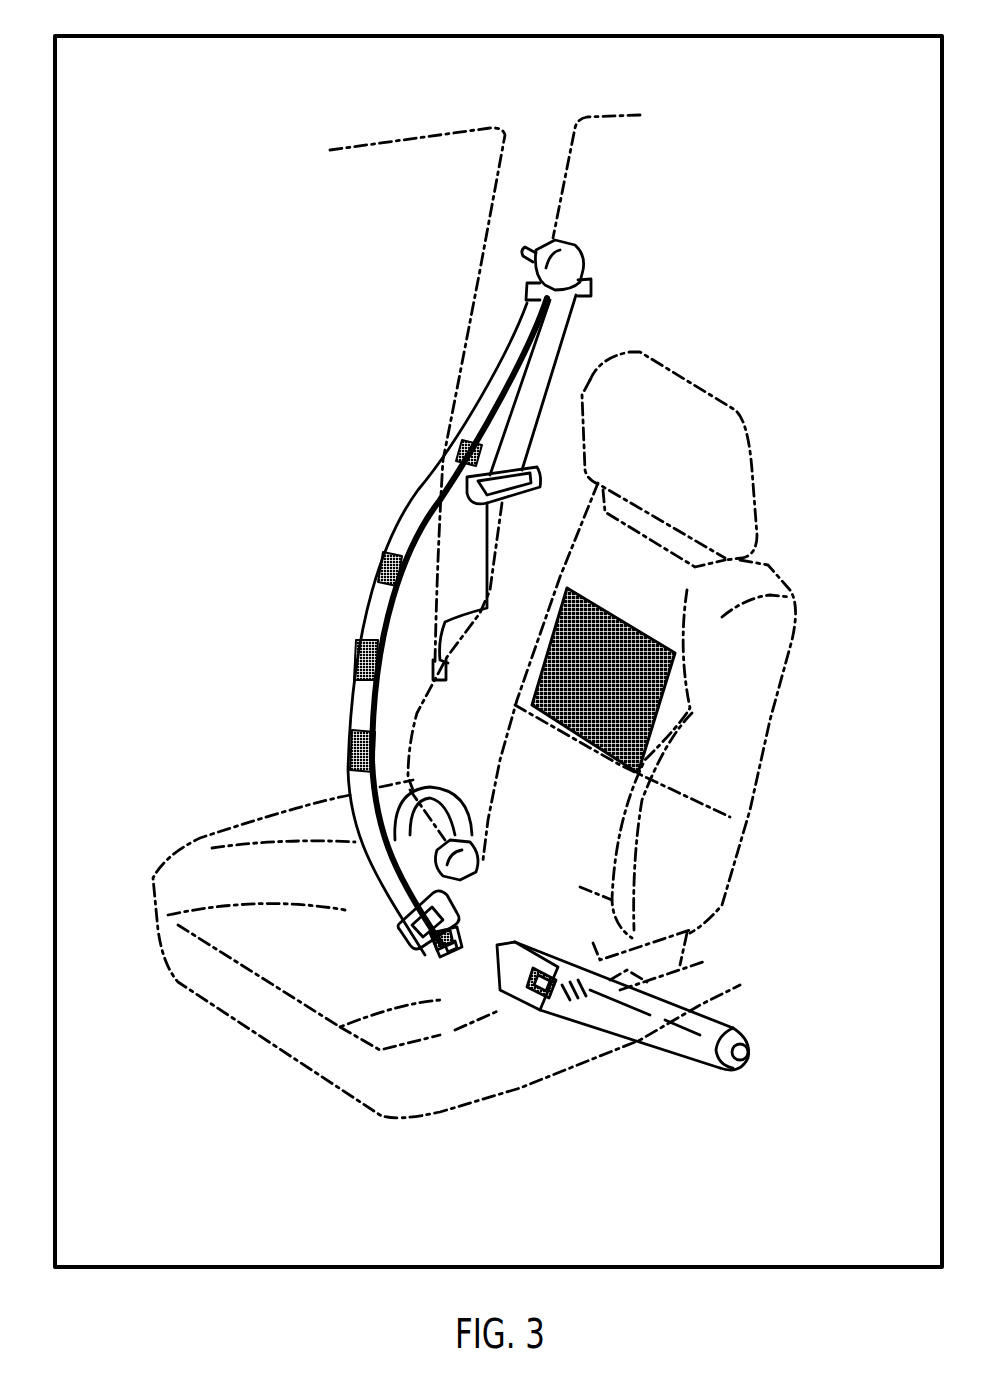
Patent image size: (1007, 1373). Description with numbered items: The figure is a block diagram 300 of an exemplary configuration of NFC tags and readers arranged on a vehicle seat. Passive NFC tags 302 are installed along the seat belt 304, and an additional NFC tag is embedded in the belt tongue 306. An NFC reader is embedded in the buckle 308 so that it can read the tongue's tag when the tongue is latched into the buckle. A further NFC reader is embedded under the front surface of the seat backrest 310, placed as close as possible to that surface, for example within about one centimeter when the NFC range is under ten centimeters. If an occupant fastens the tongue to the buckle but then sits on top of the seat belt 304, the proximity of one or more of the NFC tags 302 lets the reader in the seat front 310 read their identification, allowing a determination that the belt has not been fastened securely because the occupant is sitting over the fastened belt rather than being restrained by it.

The block diagram 300 is at (130, 36).
The NFC tags 302 is at (356, 745).
The seat belt 304 is at (555, 340).
The NFC tag in tongue 306 is at (510, 1198).
The NFC reader in buckle 308 is at (663, 1138).
The NFC reader in seat front 310 is at (812, 325).